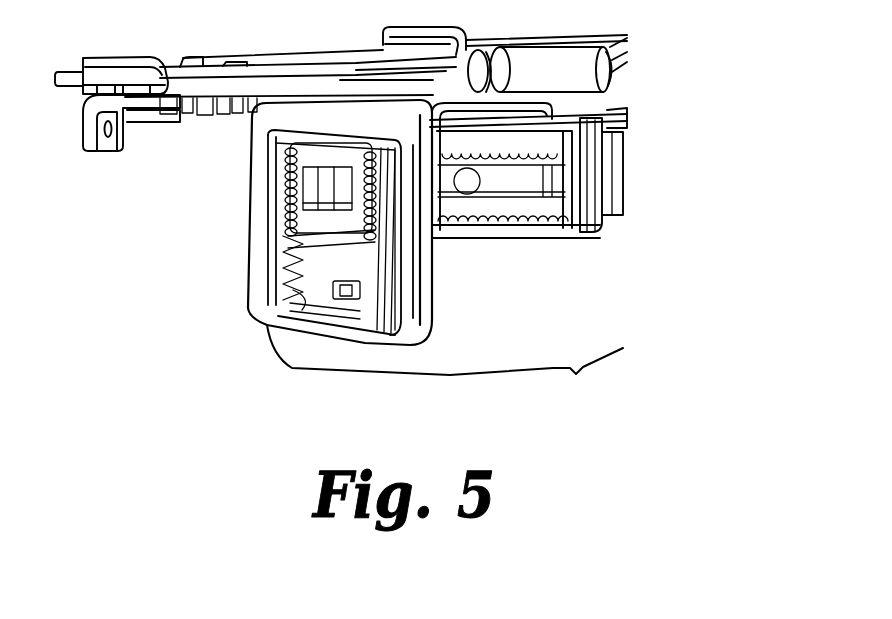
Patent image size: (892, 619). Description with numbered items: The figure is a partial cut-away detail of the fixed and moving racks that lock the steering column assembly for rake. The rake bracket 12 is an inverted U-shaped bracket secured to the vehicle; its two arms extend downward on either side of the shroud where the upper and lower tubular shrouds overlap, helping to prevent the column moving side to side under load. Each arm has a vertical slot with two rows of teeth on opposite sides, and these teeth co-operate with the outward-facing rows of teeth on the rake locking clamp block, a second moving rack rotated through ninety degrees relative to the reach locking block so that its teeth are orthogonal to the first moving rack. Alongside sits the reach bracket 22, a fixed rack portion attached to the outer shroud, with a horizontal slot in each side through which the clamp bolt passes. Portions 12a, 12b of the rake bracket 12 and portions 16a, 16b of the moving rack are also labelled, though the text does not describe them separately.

The rake bracket 12 is at (248, 168).
The lower housing portion 12a is at (300, 318).
The housing connector portion 12b is at (345, 294).
The right spring 16a is at (380, 205).
The left spring 16b is at (290, 196).
The reach bracket 22 is at (593, 235).